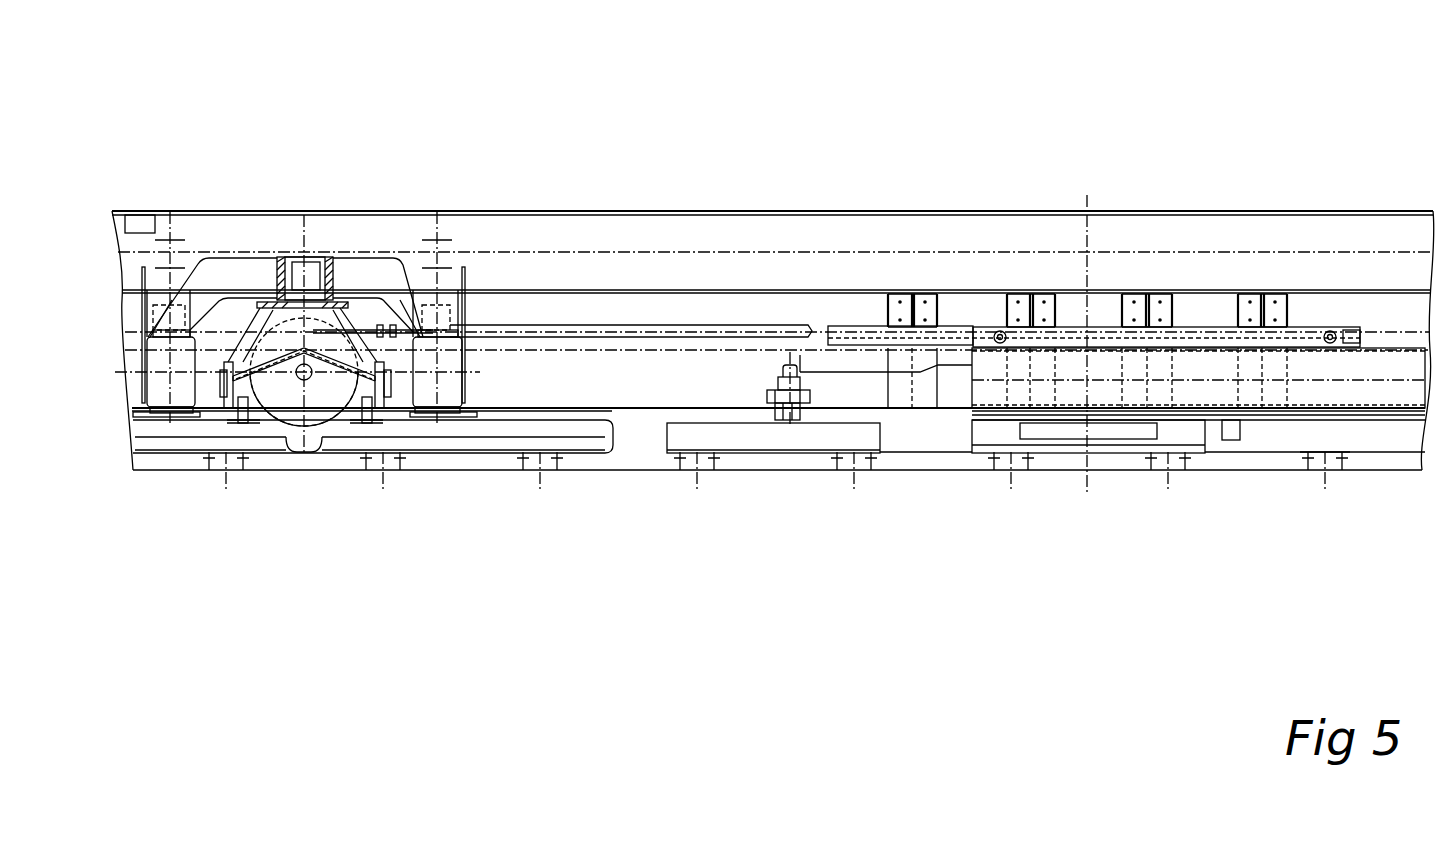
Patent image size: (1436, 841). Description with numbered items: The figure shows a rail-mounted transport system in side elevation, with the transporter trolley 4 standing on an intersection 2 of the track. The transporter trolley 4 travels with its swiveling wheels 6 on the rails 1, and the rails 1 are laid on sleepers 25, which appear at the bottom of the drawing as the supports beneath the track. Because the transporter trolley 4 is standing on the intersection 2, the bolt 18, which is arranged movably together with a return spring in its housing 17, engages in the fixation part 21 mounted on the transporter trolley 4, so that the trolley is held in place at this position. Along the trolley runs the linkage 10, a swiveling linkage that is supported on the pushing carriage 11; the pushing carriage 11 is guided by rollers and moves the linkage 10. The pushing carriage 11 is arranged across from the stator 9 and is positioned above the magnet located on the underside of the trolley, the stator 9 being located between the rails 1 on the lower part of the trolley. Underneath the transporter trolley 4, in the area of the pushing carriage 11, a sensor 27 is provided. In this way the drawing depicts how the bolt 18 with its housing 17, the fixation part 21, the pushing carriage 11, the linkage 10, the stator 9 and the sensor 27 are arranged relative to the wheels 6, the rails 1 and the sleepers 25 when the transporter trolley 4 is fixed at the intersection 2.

The rail 1 is at (290, 412).
The intersection 2 is at (368, 505).
The transporter trolley 4 is at (952, 115).
The wheel 6 is at (222, 490).
The stator 9 is at (1115, 453).
The linkage 10 is at (545, 325).
The pushing carriage 11 is at (1345, 390).
The housing 17 is at (808, 405).
The bolt 18 is at (778, 423).
The fixation part 21 is at (700, 438).
The sleeper 25 is at (1348, 470).
The sensor 27 is at (1233, 440).